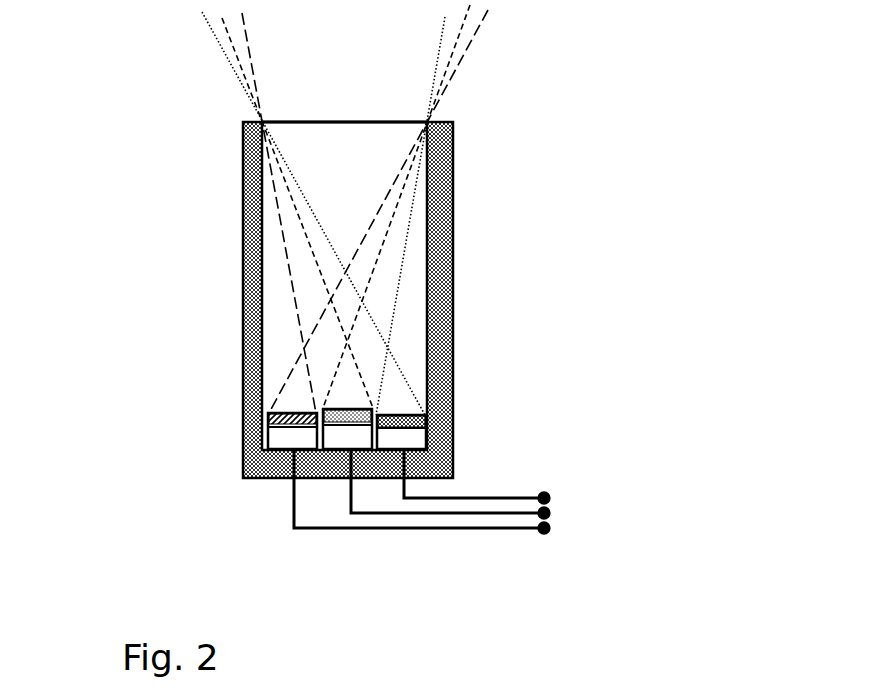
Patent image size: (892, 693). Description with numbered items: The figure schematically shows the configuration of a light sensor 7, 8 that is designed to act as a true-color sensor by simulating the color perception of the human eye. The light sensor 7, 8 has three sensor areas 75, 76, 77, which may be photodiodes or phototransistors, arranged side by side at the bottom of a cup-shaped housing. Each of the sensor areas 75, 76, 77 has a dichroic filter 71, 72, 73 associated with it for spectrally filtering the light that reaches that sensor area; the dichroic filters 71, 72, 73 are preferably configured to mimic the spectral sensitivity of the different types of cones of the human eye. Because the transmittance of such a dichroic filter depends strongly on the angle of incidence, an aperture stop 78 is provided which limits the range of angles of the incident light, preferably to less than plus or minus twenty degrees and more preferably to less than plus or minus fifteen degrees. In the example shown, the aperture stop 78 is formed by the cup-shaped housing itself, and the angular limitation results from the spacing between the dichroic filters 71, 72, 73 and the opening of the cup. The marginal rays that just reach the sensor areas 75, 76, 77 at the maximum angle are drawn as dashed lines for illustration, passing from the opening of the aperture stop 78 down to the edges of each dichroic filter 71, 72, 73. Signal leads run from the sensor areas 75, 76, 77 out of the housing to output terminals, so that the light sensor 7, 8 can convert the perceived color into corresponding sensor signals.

The light sensor 7 is at (112, 72).
The light sensor 8 is at (323, 308).
The dichroic filter 71 is at (270, 415).
The dichroic filter 72 is at (343, 407).
The dichroic filter 73 is at (403, 415).
The sensor area 75 is at (280, 442).
The sensor area 76 is at (340, 441).
The sensor area 77 is at (393, 440).
The aperture stop 78 is at (263, 277).